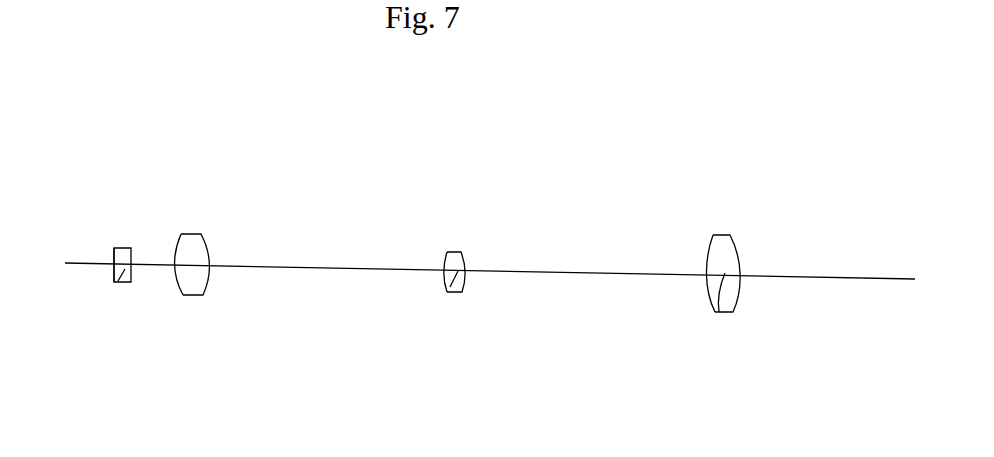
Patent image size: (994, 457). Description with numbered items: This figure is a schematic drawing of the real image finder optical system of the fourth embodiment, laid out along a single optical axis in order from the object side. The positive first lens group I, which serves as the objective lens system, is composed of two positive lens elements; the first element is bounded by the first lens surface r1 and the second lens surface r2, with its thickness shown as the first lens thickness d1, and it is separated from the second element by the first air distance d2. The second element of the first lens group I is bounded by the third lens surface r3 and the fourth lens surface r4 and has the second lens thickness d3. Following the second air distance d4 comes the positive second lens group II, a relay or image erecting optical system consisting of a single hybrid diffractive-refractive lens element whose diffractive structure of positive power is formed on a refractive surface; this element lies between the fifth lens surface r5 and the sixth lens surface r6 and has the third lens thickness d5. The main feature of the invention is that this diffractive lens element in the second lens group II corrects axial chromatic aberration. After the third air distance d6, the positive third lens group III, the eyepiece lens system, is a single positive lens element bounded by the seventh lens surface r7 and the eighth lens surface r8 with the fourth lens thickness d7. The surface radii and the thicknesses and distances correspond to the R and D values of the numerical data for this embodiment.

The first lens group I is at (225, 113).
The second lens group II is at (510, 115).
The third lens group III is at (768, 122).
The first lens surface r1 is at (115, 248).
The second lens surface r2 is at (131, 248).
The third lens surface r3 is at (181, 234).
The fourth lens surface r4 is at (201, 234).
The fifth lens surface r5 is at (447, 252).
The sixth lens surface r6 is at (461, 252).
The seventh lens surface r7 is at (713, 235).
The eighth lens surface r8 is at (728, 235).
The first lens thickness d1 is at (118, 282).
The first air distance d2 is at (150, 267).
The second lens thickness d3 is at (191, 270).
The second air distance d4 is at (327, 270).
The third lens thickness d5 is at (450, 290).
The third air distance d6 is at (590, 272).
The fourth lens thickness d7 is at (719, 312).